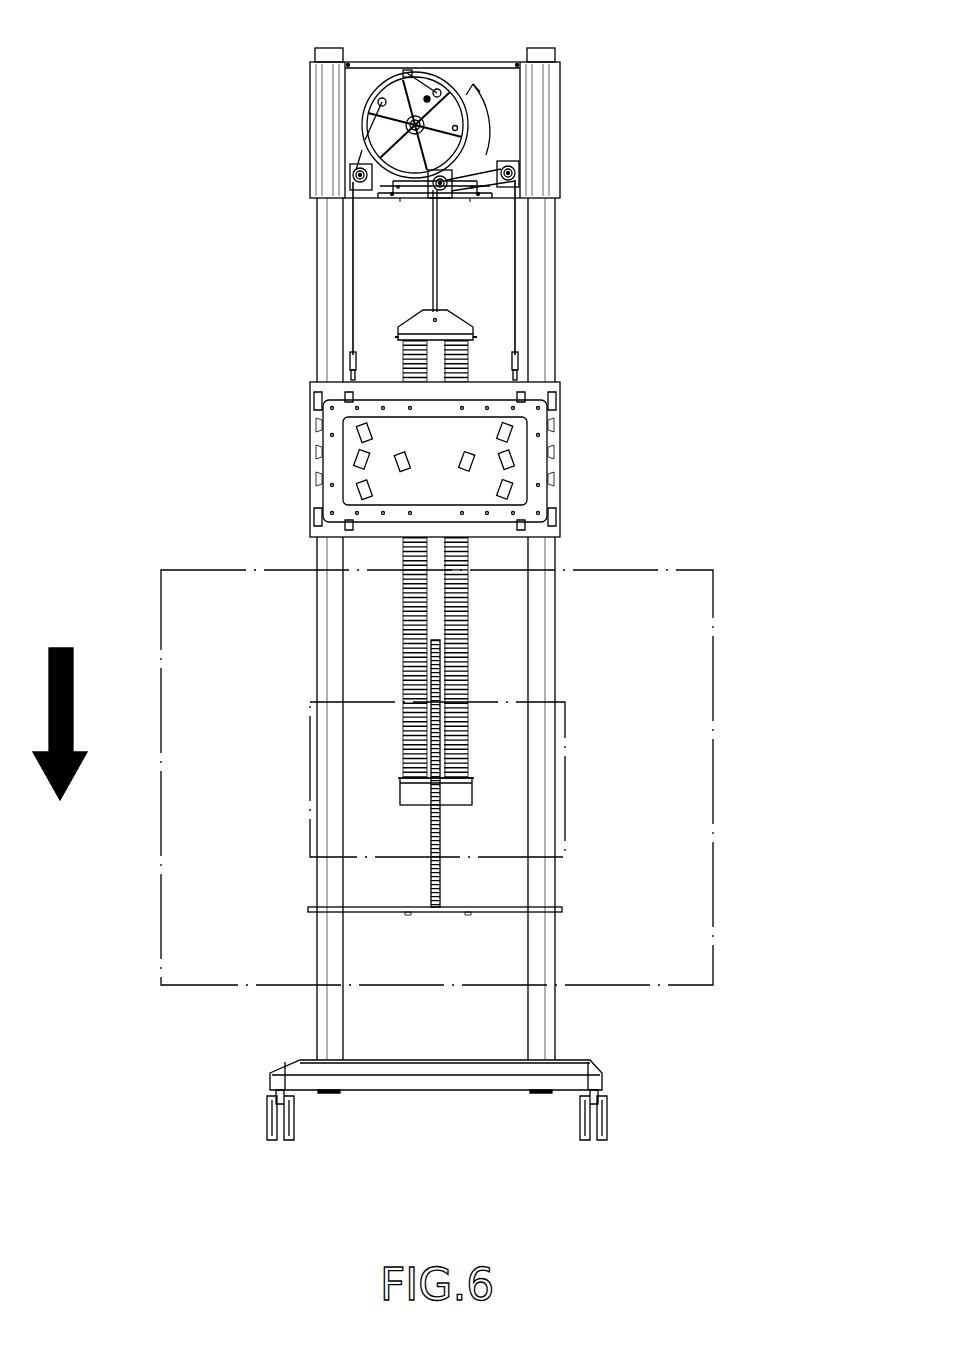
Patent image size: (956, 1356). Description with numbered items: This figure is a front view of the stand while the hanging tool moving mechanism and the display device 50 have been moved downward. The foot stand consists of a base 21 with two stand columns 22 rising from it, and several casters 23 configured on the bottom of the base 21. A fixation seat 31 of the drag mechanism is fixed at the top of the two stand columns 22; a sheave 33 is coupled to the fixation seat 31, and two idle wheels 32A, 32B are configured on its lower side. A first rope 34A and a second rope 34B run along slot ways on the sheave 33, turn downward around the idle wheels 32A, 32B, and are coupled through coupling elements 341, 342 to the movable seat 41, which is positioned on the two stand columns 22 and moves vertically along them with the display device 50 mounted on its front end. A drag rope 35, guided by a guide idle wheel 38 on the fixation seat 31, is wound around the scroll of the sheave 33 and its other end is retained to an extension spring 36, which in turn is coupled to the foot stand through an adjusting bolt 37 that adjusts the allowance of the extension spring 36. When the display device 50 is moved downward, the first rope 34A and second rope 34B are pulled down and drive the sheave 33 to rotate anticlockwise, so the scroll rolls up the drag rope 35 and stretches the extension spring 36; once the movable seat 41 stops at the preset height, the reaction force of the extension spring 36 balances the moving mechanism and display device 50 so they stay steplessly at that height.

The base 21 is at (437, 1093).
The stand columns 22 is at (316, 229).
The casters 23 is at (266, 1114).
The fixation seat 31 is at (562, 130).
The idle wheel 32A is at (352, 174).
The idle wheel 32B is at (516, 174).
The sheave 33 is at (408, 88).
The first rope 34A is at (350, 296).
The second rope 34B is at (518, 296).
The coupling element 341 is at (350, 366).
The coupling element 342 is at (520, 365).
The drag rope 35 is at (433, 248).
The extension spring 36 is at (470, 612).
The adjusting bolt 37 is at (441, 826).
The guide idle wheel 38 is at (447, 203).
The movable seat 41 is at (562, 455).
The display device 50 is at (715, 778).